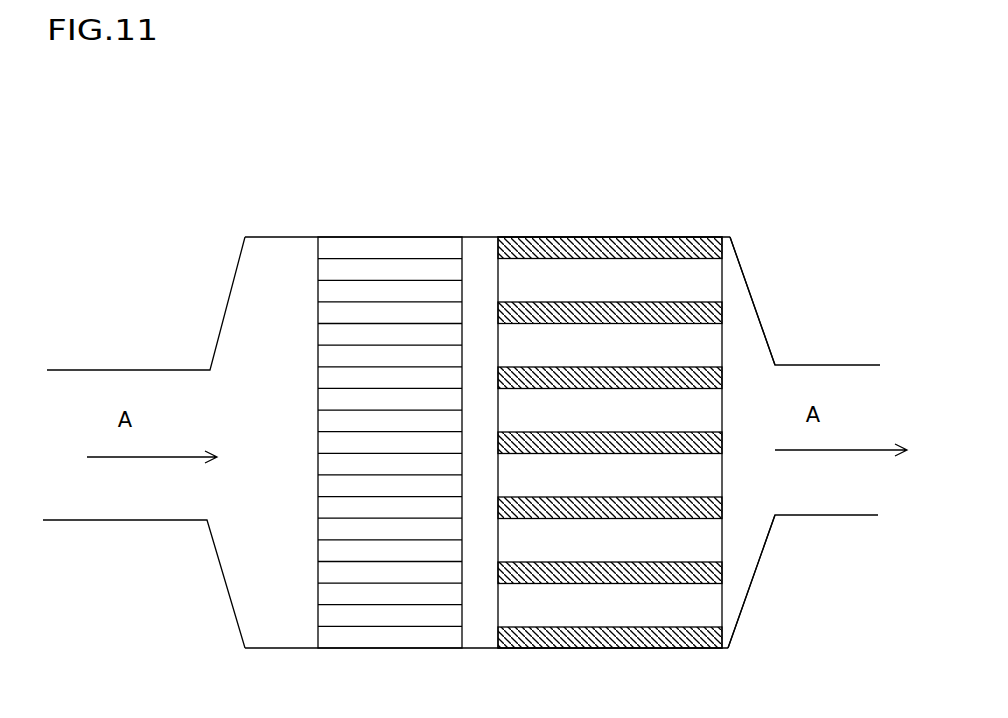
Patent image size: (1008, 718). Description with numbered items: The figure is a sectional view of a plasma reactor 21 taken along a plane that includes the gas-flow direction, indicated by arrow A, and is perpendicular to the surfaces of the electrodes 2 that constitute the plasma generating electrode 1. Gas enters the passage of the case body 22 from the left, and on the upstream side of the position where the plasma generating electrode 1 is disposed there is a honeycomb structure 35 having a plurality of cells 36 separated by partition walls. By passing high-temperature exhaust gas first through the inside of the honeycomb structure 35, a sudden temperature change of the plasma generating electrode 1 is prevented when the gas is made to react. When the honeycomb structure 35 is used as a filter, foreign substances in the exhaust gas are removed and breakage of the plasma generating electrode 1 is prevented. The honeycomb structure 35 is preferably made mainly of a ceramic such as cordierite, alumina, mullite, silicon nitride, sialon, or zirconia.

The plasma generating electrode 1 is at (609, 209).
The electrodes 2 is at (667, 245).
The plasma reactor 21 is at (253, 92).
The case body 22 is at (740, 370).
The honeycomb structure 35 is at (395, 214).
The cells 36 is at (357, 317).